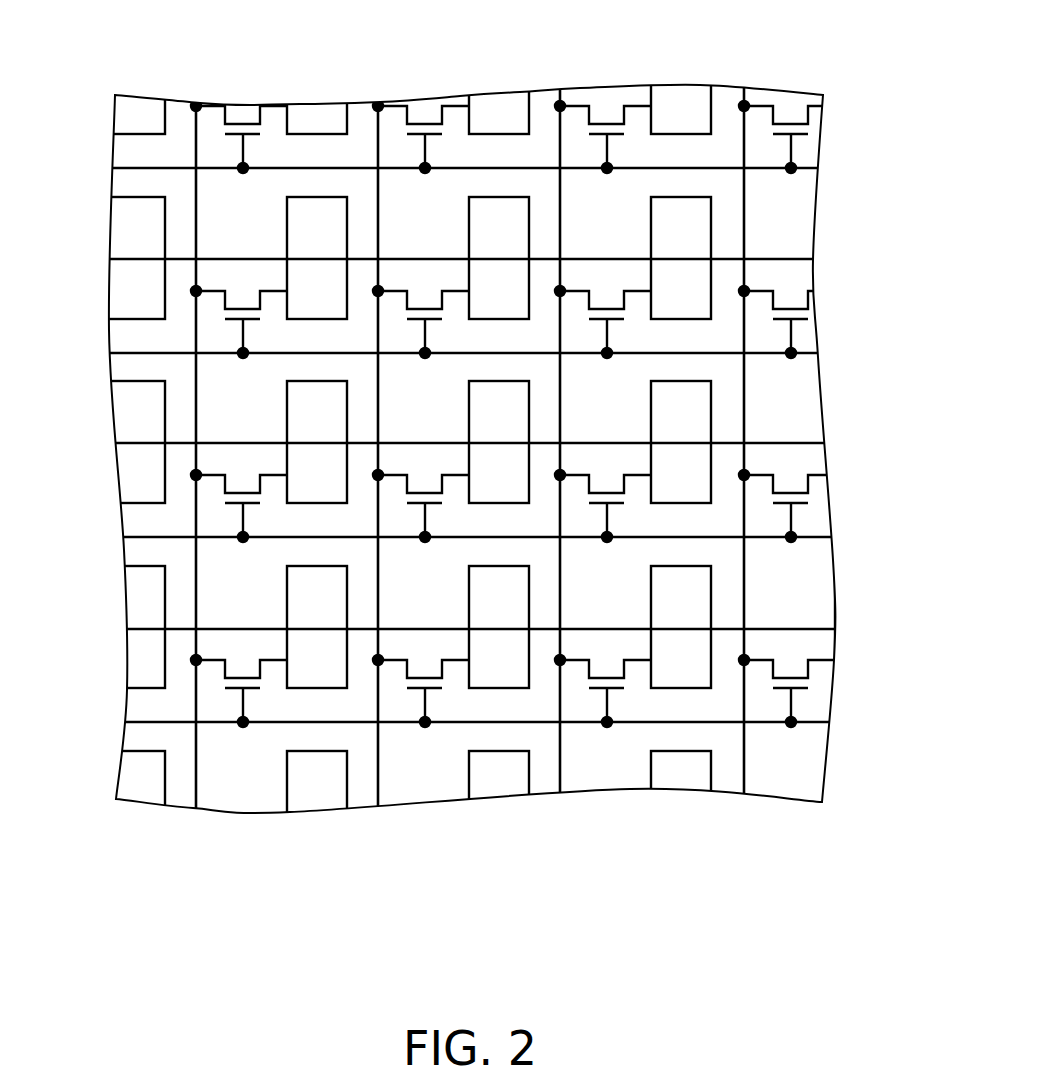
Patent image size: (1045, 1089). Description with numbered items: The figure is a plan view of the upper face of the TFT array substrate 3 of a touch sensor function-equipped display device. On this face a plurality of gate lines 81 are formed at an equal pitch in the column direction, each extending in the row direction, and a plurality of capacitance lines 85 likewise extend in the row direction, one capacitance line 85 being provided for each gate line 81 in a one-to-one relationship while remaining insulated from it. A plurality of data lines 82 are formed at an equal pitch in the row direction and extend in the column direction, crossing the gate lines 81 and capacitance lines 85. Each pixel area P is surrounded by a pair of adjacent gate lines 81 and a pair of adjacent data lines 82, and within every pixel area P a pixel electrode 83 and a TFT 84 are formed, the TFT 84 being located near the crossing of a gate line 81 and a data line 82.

The TFT array substrate 3 is at (790, 83).
The gate line 81 is at (146, 168).
The data line 82 is at (196, 134).
The pixel electrode 83 is at (498, 222).
The TFT 84 is at (422, 284).
The capacitance line 85 is at (797, 259).
The pixel area P is at (727, 247).